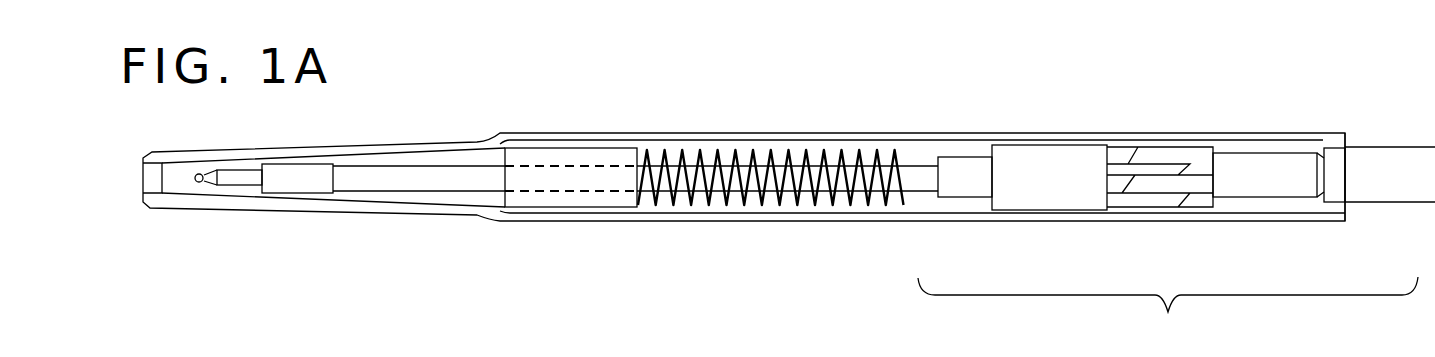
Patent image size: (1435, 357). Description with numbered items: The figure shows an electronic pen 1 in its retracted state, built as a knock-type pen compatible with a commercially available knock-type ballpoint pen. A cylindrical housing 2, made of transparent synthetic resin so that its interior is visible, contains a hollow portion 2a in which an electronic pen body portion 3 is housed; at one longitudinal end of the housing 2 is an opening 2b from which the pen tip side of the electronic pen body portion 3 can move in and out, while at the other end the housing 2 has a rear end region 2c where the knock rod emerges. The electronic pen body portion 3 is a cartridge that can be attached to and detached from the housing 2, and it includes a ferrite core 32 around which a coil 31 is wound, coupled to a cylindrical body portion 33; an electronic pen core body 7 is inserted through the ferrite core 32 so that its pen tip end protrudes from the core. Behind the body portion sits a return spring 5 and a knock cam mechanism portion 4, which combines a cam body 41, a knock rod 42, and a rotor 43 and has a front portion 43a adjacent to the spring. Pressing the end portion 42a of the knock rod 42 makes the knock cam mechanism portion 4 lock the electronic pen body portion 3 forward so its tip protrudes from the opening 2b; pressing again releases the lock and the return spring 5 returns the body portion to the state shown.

The electronic pen 1 is at (1172, 120).
The housing 2 is at (802, 138).
The hollow portion 2a is at (922, 150).
The opening 2b is at (152, 181).
The rear opening 2c is at (1347, 145).
The electronic pen body portion 3 is at (414, 197).
The coil 31 is at (295, 177).
The ferrite core 32 is at (243, 177).
The cylindrical body portion 33 is at (492, 175).
The electronic pen core body 7 is at (199, 174).
The return spring 5 is at (796, 208).
The knock cam mechanism portion 4 is at (1168, 313).
The cam body 41 is at (1150, 190).
The knock rod 42 is at (1263, 197).
The end portion 42a is at (1378, 190).
The rotor 43 is at (1050, 188).
The cam body front portion 43a is at (970, 192).